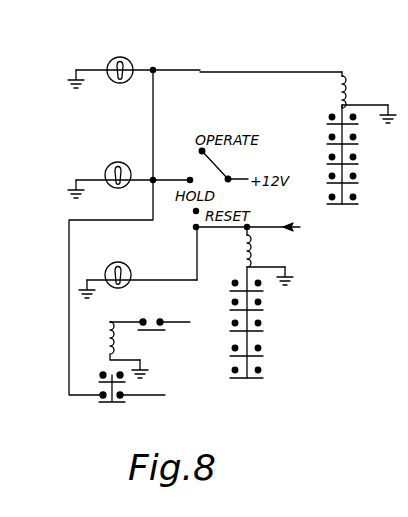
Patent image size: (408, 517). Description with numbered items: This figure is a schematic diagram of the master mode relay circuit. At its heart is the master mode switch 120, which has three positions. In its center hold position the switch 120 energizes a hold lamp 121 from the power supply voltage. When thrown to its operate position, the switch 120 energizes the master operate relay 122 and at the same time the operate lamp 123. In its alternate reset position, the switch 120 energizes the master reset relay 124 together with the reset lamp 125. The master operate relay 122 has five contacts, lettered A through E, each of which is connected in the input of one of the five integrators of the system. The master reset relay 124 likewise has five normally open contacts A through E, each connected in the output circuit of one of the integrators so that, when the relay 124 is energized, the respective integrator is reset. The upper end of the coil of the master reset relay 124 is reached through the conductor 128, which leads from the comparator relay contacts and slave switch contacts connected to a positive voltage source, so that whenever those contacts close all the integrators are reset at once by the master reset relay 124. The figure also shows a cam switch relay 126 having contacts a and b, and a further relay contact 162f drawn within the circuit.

The master mode switch 120 is at (215, 165).
The hold lamp 121 is at (119, 162).
The master operate relay 122 is at (337, 89).
The operate lamp 123 is at (120, 60).
The master reset relay 124 is at (252, 251).
The reset lamp 125 is at (126, 248).
The cam switch relay 126 is at (103, 339).
The conductor 128 is at (300, 227).
The relay contact 162f is at (152, 334).